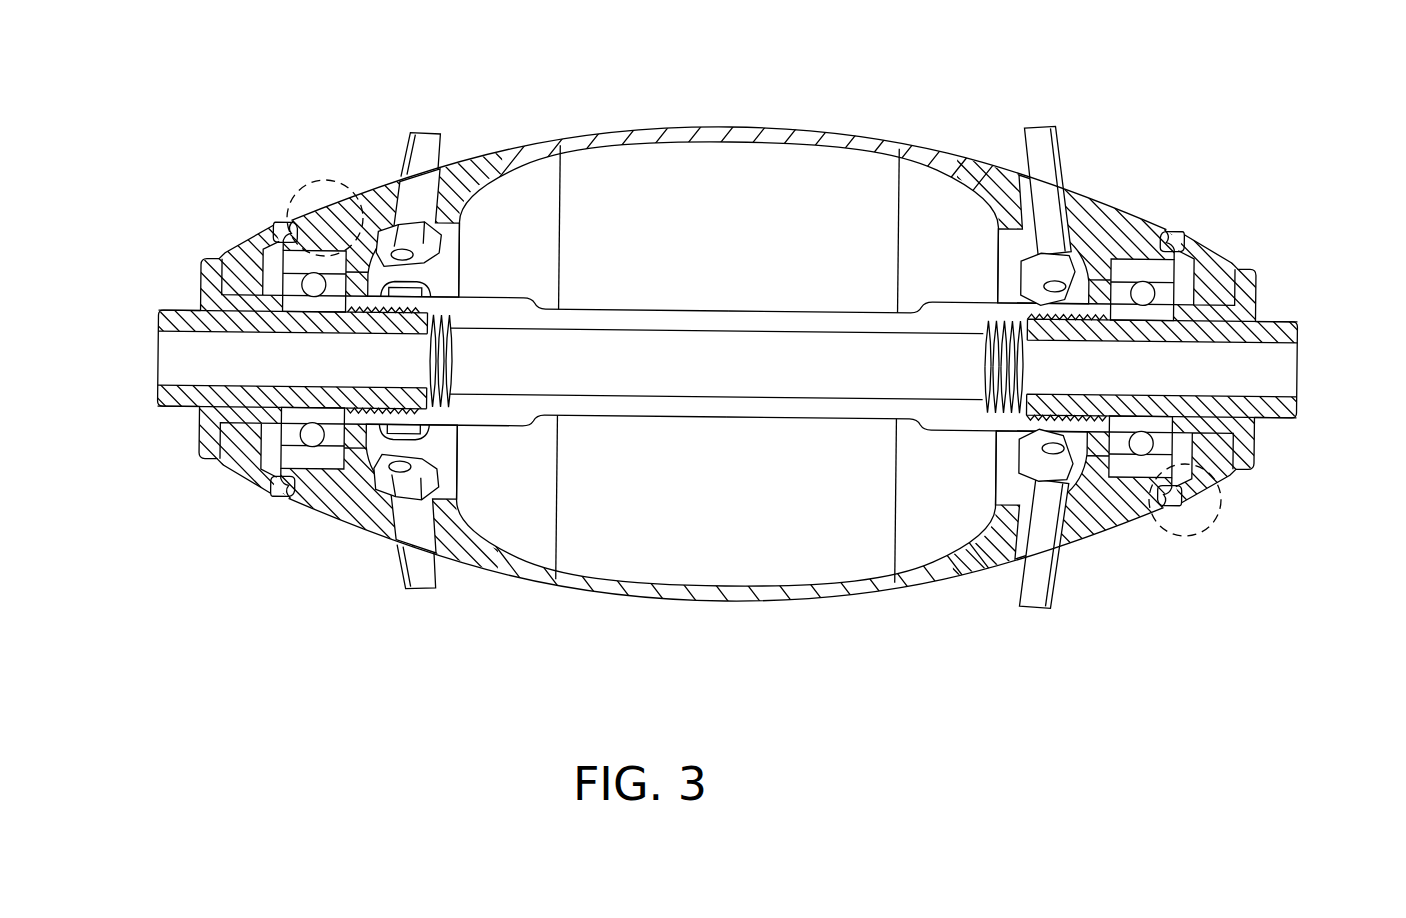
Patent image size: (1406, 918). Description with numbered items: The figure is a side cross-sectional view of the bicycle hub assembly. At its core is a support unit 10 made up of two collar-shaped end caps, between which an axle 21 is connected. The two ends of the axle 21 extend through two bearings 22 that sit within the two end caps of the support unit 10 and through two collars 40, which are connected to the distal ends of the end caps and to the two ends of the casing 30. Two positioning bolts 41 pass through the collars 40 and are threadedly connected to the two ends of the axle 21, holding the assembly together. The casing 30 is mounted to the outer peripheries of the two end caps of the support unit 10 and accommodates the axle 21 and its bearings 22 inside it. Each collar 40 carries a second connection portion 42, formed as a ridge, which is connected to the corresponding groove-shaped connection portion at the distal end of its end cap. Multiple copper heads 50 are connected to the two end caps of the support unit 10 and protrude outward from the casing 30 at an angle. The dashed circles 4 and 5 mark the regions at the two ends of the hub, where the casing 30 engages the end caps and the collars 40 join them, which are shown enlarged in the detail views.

The support unit 10 is at (368, 510).
The axle 21 is at (858, 325).
The bearings 22 is at (1147, 275).
The casing 30 is at (762, 124).
The collars 40 is at (233, 481).
The positioning bolts 41 is at (163, 317).
The second connection portion 42 is at (287, 238).
The copper heads 50 is at (1055, 125).
The detail circle of FIG. 4 is at (325, 206).
The detail circle of FIG. 5 is at (1185, 509).